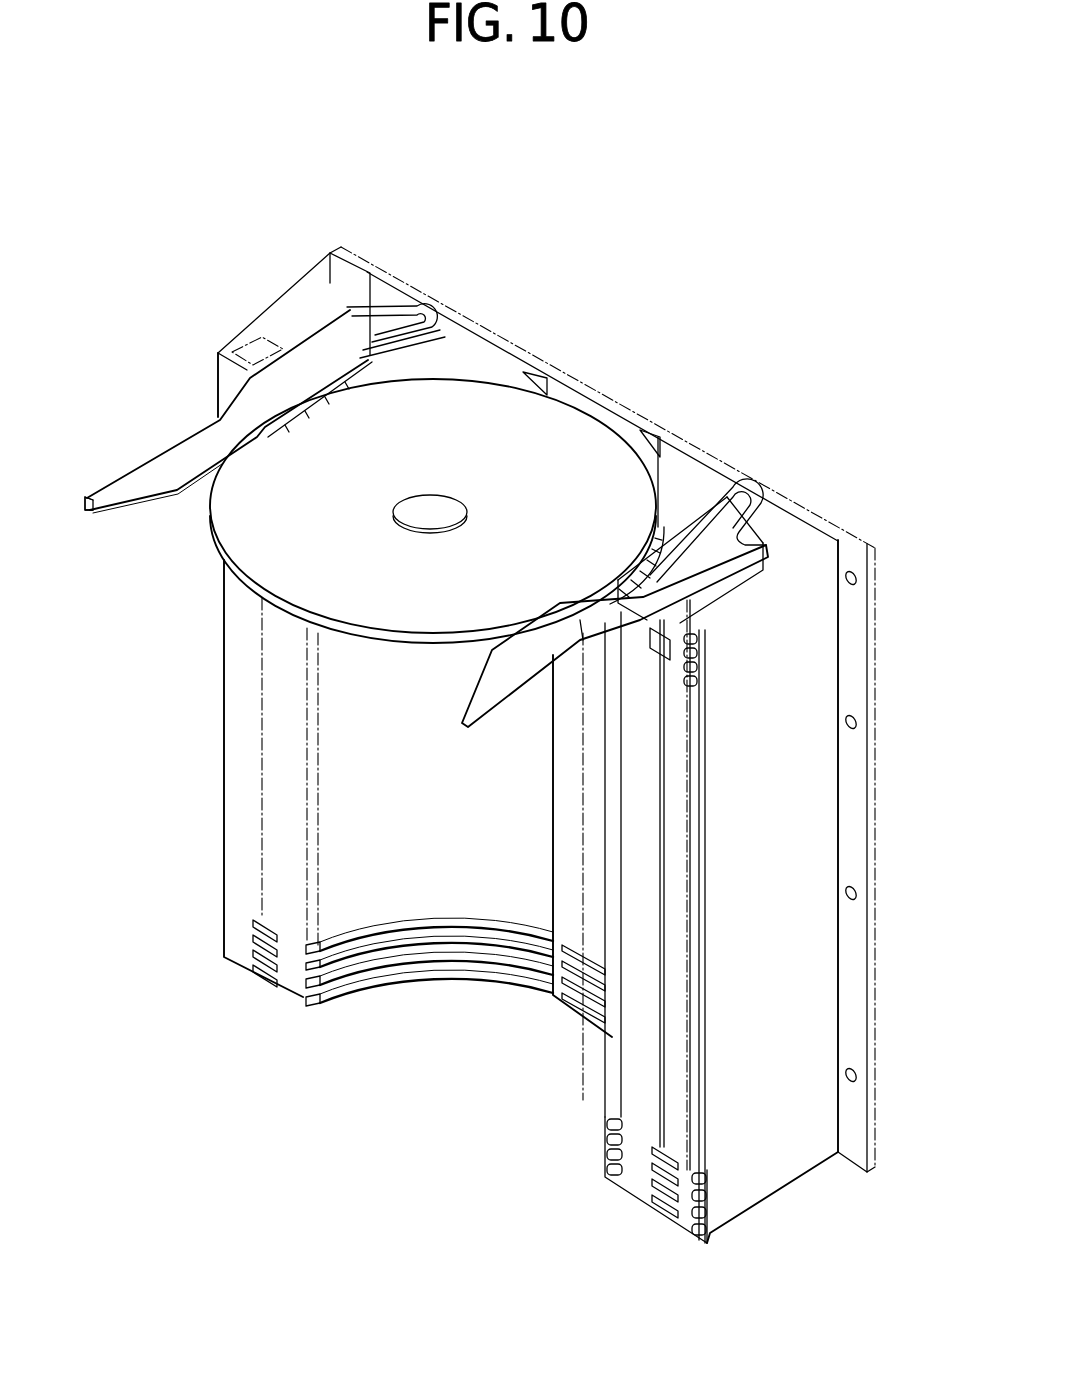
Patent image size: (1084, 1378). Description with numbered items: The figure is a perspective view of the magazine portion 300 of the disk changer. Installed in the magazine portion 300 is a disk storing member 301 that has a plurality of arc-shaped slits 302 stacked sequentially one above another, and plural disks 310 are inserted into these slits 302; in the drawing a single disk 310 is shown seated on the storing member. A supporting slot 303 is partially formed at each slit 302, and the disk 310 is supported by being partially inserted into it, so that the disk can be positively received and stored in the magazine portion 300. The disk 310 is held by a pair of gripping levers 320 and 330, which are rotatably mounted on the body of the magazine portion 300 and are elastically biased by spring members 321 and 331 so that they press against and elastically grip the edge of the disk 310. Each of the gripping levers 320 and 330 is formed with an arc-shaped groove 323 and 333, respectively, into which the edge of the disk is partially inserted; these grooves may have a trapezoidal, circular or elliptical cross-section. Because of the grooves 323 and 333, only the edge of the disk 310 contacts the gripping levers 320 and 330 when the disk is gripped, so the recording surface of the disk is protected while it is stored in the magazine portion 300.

The magazine portion 300 is at (164, 864).
The disk storing member 301 is at (228, 391).
The arc-shaped slits 302 is at (307, 995).
The supporting slot 303 is at (578, 985).
The disk 310 is at (555, 433).
The gripping lever 320 is at (313, 340).
The spring member 321 is at (393, 313).
The arc-shaped groove 323 is at (98, 508).
The gripping lever 330 is at (612, 609).
The spring member 331 is at (752, 483).
The arc-shaped groove 333 is at (460, 722).